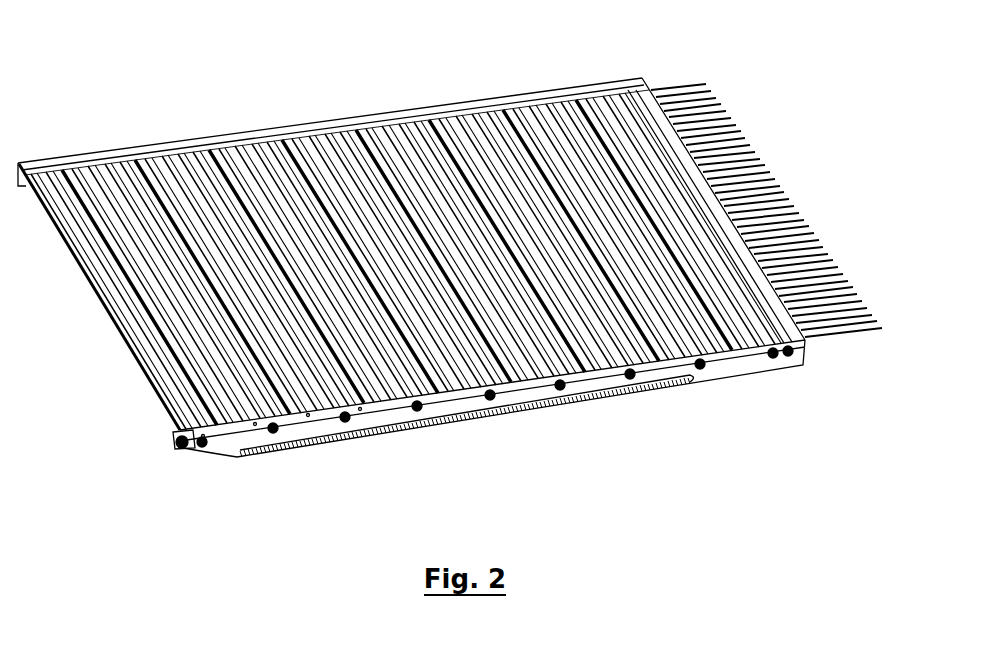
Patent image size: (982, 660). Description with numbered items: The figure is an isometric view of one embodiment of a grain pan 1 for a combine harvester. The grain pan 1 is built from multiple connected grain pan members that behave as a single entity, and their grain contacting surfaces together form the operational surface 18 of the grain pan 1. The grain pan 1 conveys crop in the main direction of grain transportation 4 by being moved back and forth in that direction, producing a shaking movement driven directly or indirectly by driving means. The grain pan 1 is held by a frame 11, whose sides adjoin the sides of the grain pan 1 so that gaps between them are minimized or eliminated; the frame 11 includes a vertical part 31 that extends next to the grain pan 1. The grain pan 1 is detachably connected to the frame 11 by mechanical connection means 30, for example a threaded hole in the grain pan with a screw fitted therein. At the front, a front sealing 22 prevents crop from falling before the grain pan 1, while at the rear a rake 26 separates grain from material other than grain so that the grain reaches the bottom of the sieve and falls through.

The grain pan 1 is at (469, 313).
The main direction of grain transportation 4 is at (614, 37).
The frame 11 is at (551, 451).
The operational surface 18 is at (200, 452).
The front sealing 22 is at (28, 149).
The rake 26 is at (809, 209).
The mechanical connection means 30 is at (415, 413).
The vertical part 31 is at (758, 381).